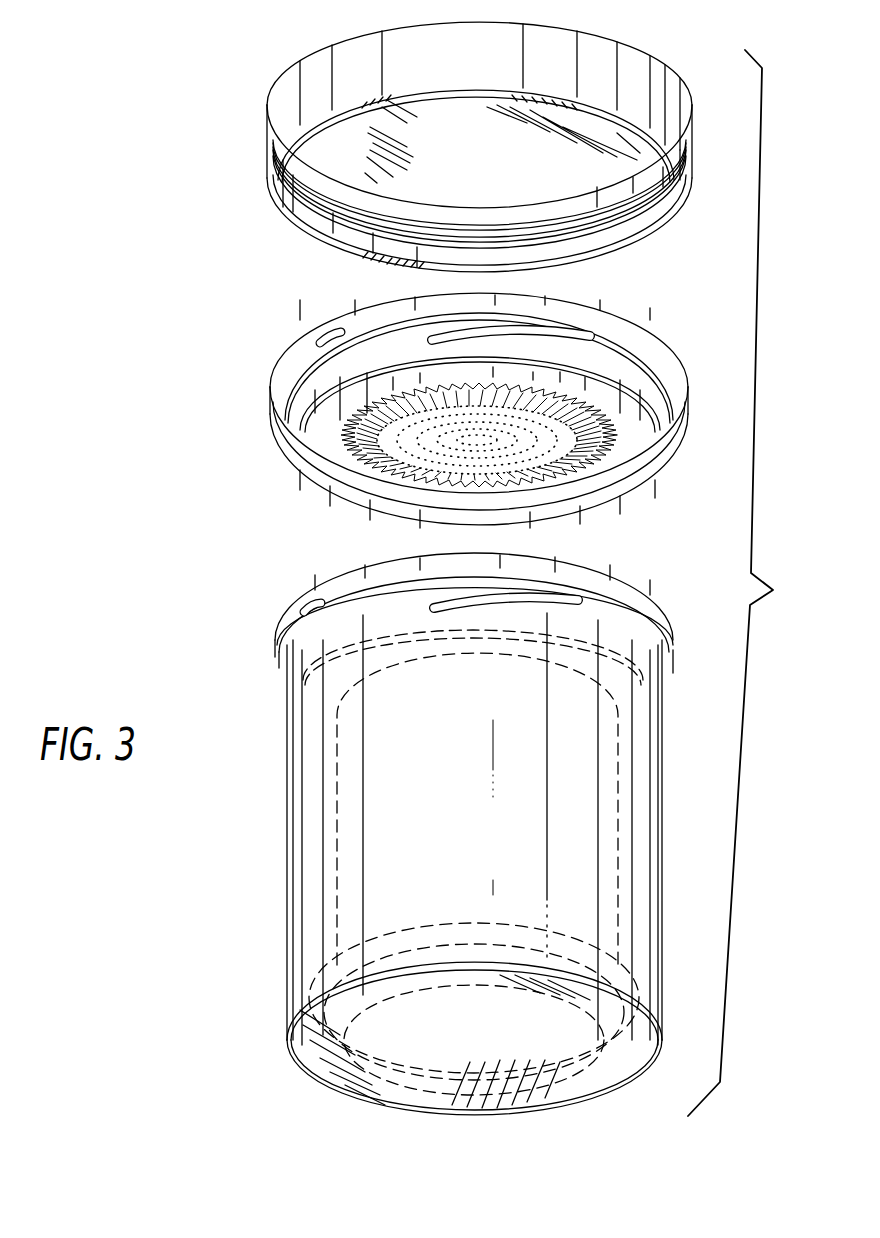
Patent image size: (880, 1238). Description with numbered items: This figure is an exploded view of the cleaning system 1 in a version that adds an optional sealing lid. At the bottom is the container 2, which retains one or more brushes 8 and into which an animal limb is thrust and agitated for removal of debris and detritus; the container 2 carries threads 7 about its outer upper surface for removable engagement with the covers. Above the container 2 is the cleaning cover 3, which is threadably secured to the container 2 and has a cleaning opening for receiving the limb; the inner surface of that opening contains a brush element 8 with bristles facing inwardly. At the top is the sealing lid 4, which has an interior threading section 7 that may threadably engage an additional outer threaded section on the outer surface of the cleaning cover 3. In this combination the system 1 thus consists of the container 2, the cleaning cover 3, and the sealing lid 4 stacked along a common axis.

The cleaning system 1 is at (270, 293).
The container 2 is at (287, 800).
The cleaning cover 3 is at (277, 374).
The sealing lid 4 is at (267, 92).
The threads 7 is at (555, 243).
The brush 8 is at (557, 480).